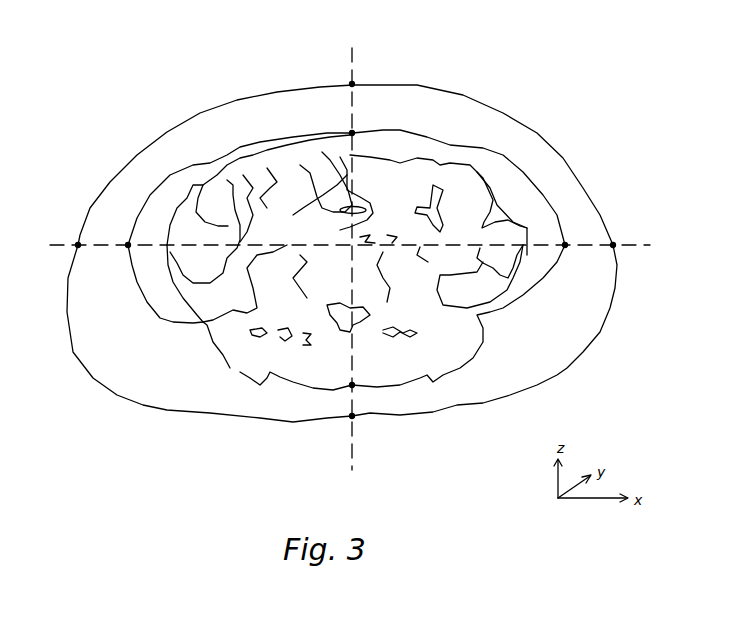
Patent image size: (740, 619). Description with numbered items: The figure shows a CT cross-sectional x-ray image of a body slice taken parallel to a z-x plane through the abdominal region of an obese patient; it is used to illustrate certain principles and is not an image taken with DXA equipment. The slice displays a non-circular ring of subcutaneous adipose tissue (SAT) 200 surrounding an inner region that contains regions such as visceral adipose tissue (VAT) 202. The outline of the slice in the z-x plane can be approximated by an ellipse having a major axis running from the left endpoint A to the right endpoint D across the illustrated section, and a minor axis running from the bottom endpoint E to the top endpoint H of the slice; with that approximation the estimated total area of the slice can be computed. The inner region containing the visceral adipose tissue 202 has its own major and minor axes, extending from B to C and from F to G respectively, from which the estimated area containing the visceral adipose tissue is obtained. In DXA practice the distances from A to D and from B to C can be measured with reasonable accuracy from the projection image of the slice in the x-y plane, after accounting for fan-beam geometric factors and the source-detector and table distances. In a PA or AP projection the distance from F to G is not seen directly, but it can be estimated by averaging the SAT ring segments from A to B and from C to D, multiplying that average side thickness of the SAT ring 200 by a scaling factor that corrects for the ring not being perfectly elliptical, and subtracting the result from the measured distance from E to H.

The subcutaneous adipose tissue ring 200 is at (570, 323).
The visceral adipose tissue region 202 is at (223, 295).
The left end of major axis AD A is at (78, 245).
The left end of inner major axis BC B is at (128, 245).
The right end of inner major axis BC C is at (565, 245).
The right end of major axis AD D is at (613, 245).
The bottom end of minor axis EH E is at (352, 416).
The bottom end of inner minor axis FG F is at (352, 385).
The top end of inner minor axis FG G is at (352, 133).
The top end of minor axis EH H is at (352, 84).